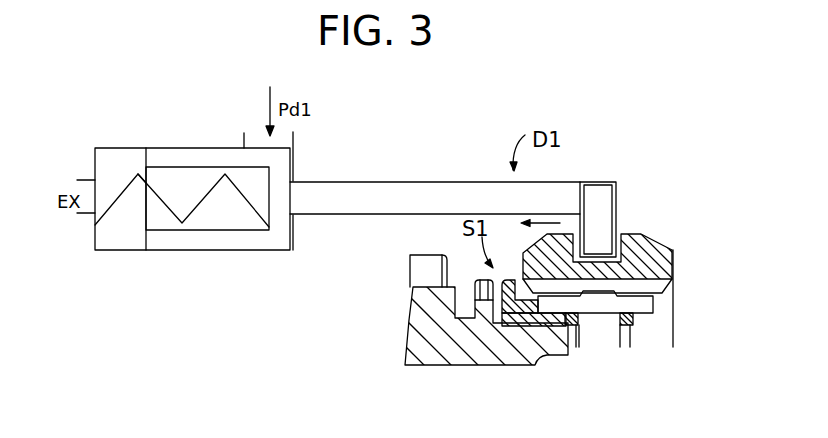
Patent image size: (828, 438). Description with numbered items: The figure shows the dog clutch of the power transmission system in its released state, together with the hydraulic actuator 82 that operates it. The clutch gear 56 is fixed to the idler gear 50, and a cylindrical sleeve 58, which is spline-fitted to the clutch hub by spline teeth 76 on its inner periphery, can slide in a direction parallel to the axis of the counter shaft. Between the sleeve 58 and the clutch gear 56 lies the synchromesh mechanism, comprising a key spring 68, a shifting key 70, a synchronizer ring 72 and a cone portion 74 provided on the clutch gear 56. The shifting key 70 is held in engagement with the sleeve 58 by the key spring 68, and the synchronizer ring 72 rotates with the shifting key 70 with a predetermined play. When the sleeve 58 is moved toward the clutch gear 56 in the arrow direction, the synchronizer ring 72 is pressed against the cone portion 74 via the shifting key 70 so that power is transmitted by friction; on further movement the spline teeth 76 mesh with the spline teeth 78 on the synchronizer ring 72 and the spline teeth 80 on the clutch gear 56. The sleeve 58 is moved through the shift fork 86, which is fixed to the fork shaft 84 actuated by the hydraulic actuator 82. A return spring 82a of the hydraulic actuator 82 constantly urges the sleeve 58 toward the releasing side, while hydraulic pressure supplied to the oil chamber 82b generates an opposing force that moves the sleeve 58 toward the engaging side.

The idler gear 50 is at (433, 350).
The clutch gear 56 is at (477, 298).
The sleeve 58 is at (647, 248).
The key spring 68 is at (633, 320).
The shifting key 70 is at (598, 302).
The synchronizer ring 72 is at (517, 330).
The cone portion 74 is at (552, 343).
The spline teeth 76 is at (644, 300).
The spline teeth 78 is at (507, 278).
The spline teeth 80 is at (483, 290).
The hydraulic actuator 82 is at (208, 93).
The return spring 82a is at (113, 203).
The oil chamber 82b is at (294, 250).
The fork shaft 84 is at (408, 192).
The shift fork 86 is at (600, 188).